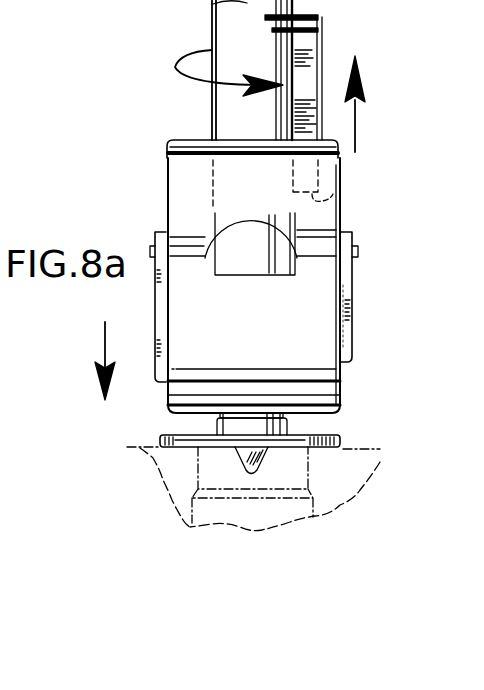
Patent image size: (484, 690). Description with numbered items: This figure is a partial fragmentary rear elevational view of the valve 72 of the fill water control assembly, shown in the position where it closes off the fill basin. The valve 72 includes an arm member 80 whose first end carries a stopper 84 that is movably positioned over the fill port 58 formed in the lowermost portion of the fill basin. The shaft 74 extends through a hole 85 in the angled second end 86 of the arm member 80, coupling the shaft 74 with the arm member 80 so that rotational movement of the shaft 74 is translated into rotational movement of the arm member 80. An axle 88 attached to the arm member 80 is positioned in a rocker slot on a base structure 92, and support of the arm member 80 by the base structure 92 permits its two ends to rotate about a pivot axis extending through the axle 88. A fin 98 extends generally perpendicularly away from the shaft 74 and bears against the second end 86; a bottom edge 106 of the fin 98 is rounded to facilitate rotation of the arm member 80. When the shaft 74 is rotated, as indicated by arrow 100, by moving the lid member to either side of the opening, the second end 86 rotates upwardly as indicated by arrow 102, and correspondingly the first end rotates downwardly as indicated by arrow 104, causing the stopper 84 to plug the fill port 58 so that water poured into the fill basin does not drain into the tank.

The fill port 58 is at (177, 510).
The valve 72 is at (104, 128).
The shaft 74 is at (213, 106).
The arm member 80 is at (166, 186).
The stopper 84 is at (158, 442).
The hole 85 is at (300, 228).
The second end 86 is at (177, 147).
The axle 88 is at (152, 250).
The base structure 92 is at (351, 334).
The fin 98 is at (318, 44).
The arrow 100 is at (175, 67).
The arrow 102 is at (355, 125).
The arrow 104 is at (103, 335).
The bottom edge 106 is at (337, 192).